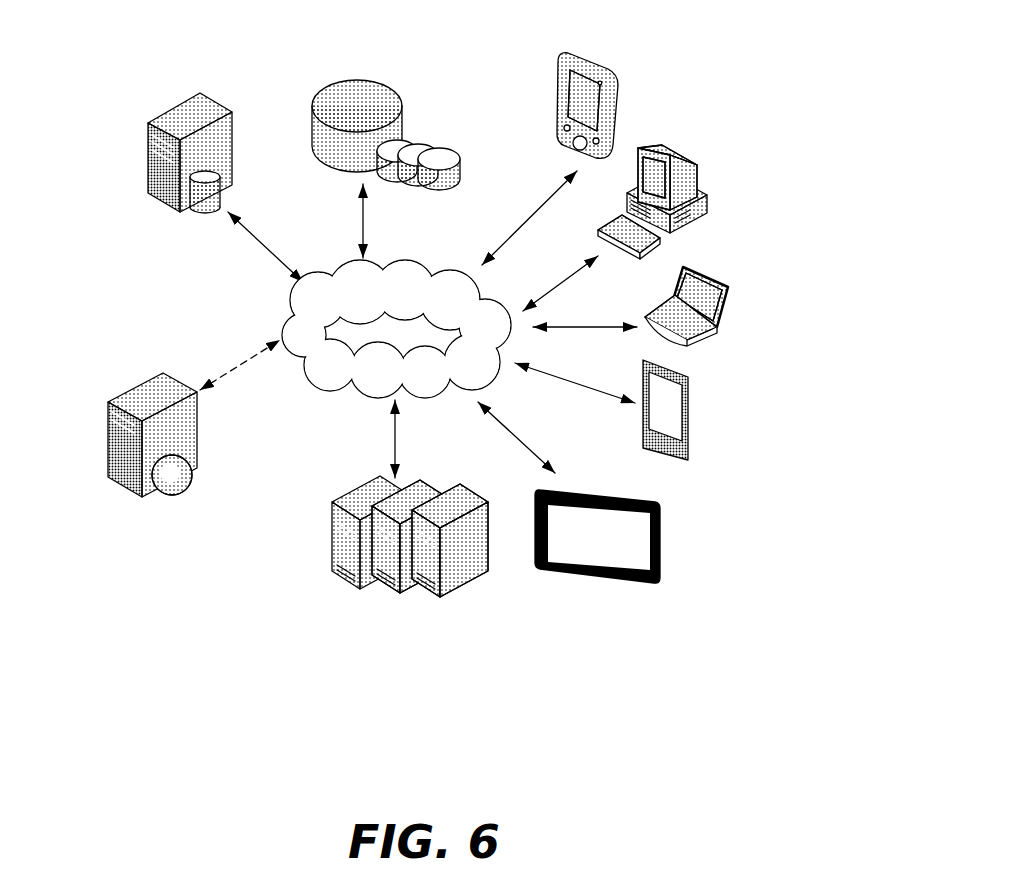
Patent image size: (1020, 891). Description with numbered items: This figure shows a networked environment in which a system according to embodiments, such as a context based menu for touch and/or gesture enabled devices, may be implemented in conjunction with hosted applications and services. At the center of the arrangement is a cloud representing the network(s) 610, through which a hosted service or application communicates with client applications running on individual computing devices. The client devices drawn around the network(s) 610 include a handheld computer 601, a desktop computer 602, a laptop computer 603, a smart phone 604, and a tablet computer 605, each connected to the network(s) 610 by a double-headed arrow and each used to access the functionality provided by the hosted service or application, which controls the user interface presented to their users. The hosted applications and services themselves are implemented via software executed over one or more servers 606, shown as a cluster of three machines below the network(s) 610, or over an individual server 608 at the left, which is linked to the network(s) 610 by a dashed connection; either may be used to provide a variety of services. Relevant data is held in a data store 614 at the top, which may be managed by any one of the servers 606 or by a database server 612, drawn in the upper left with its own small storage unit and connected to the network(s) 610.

The handheld computer 601 is at (619, 58).
The desktop computer 602 is at (709, 150).
The laptop computer 603 is at (727, 263).
The smart phone 604 is at (697, 383).
The tablet computer 605 is at (632, 497).
The servers 606 is at (357, 481).
The individual server 608 is at (129, 381).
The network(s) 610 is at (402, 253).
The database server 612 is at (203, 225).
The data store 614 is at (372, 58).